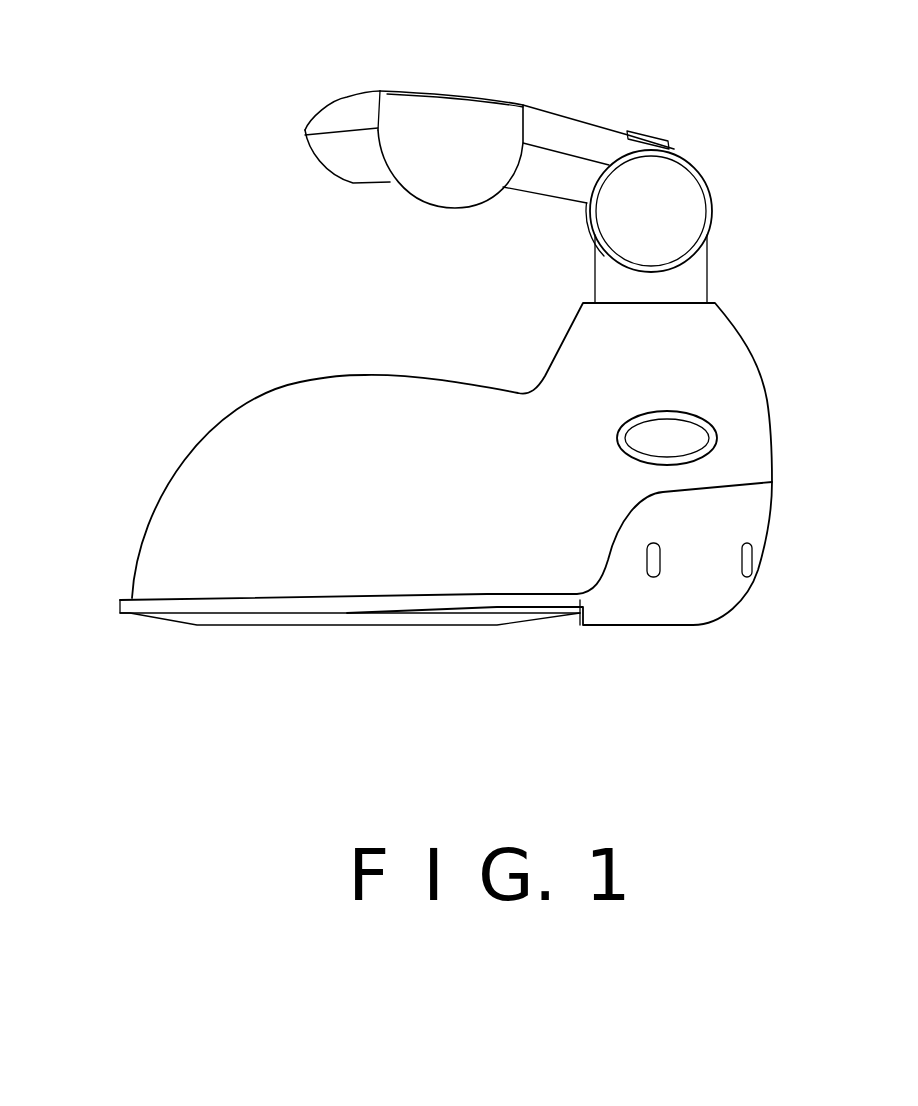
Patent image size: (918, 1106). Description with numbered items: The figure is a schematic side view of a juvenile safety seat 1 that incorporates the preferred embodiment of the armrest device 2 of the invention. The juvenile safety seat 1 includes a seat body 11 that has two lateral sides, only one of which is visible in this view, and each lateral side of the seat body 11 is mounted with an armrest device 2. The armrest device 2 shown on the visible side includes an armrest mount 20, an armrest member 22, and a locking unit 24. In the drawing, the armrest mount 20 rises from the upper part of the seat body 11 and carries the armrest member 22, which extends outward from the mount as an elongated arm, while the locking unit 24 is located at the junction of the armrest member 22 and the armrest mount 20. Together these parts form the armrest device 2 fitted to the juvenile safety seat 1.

The juvenile safety seat 1 is at (530, 642).
The seat body 11 is at (377, 582).
The armrest device 2 is at (558, 150).
The armrest mount 20 is at (700, 280).
The armrest member 22 is at (558, 133).
The locking unit 24 is at (647, 137).